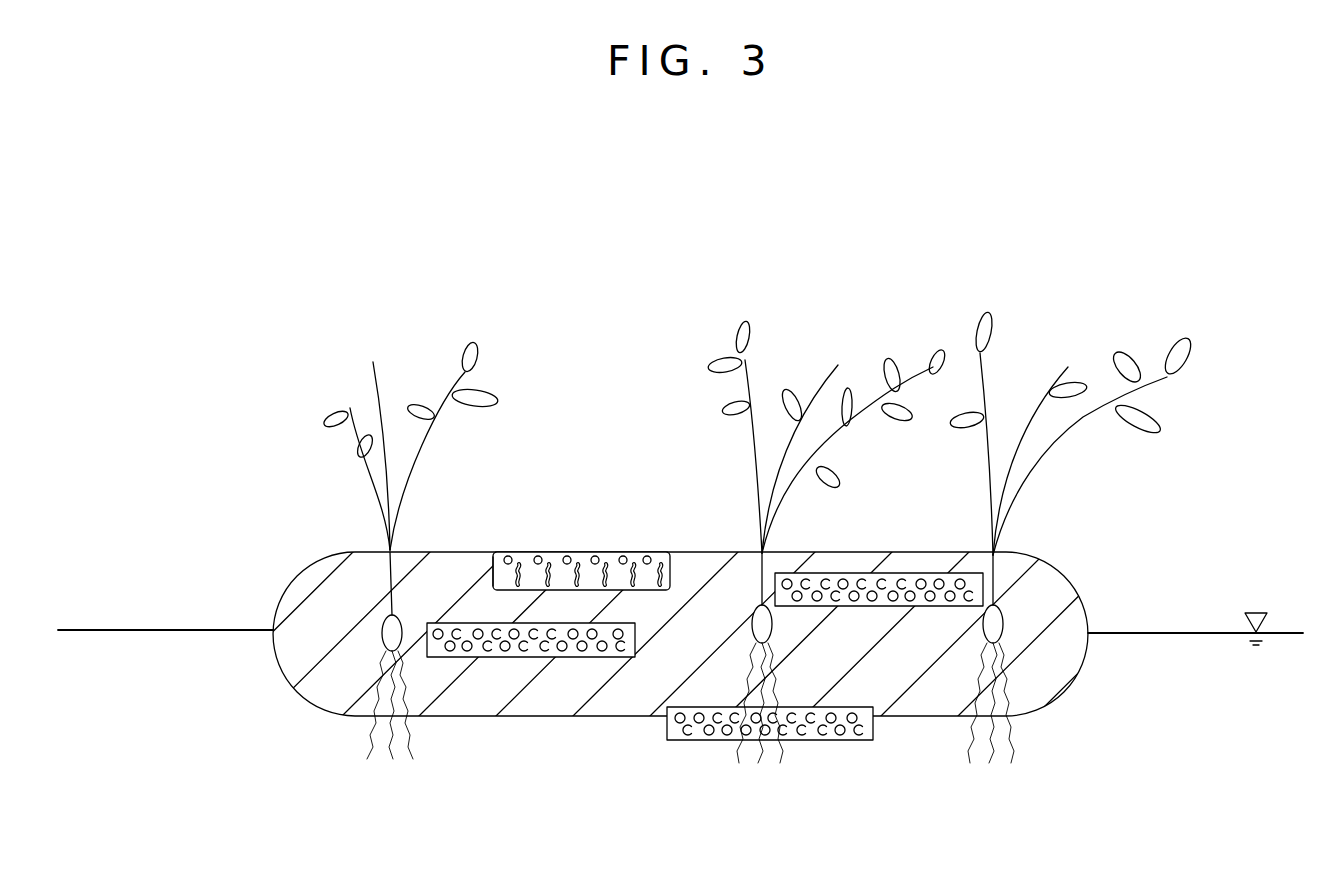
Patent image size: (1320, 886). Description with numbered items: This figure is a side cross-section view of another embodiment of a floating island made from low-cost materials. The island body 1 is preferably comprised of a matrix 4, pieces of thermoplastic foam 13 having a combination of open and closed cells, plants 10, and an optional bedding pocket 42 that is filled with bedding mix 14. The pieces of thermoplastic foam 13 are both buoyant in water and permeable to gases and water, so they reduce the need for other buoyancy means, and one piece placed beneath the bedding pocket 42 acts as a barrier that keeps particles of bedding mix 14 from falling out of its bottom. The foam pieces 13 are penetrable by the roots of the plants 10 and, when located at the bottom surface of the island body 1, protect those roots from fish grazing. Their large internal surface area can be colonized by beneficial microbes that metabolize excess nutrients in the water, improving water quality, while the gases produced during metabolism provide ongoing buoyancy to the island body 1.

The island body 1 is at (276, 542).
The matrix 4 is at (298, 628).
The plants 10 is at (378, 383).
The pieces of thermoplastic foam 13 is at (839, 573).
The bedding mix 14 is at (552, 552).
The bedding pocket 42 is at (490, 573).